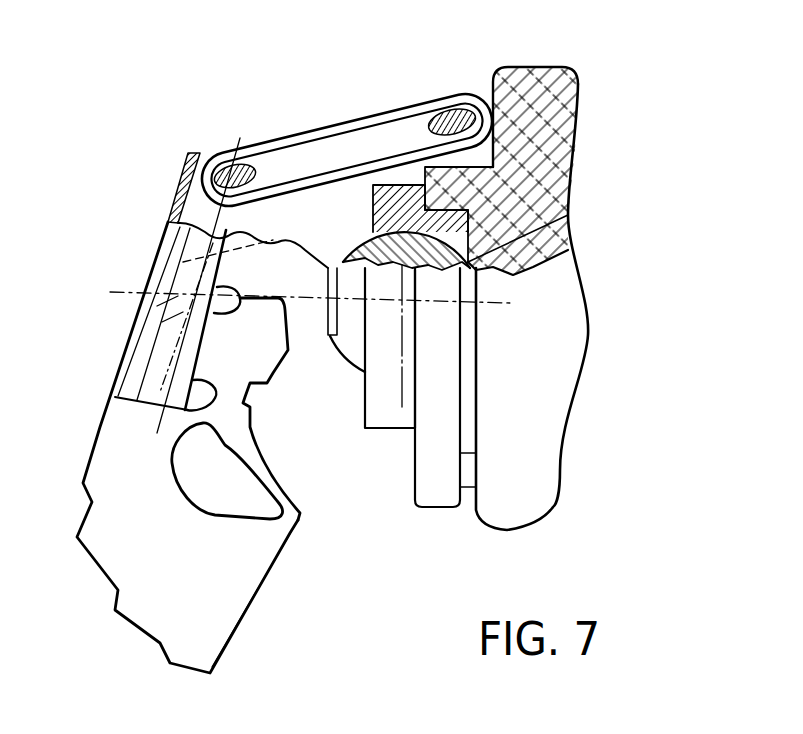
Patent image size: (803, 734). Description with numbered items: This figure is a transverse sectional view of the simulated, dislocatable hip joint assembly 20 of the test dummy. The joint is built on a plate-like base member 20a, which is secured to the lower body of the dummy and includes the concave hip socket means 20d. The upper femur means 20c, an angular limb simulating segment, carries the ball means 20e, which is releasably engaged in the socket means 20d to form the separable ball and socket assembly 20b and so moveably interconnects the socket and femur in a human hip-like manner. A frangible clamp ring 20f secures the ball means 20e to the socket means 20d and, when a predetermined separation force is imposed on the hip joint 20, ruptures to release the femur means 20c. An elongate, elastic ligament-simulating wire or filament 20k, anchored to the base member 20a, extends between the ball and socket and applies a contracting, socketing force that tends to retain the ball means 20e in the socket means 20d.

The hip joint assembly 20 is at (628, 154).
The base member 20a is at (567, 83).
The ball and socket assembly 20b is at (330, 336).
The upper femur means 20c is at (253, 589).
The hip socket means 20d is at (568, 215).
The ball means 20e is at (352, 373).
The frangible clamp ring 20f is at (373, 207).
The resilient wire or filament 20k is at (312, 132).